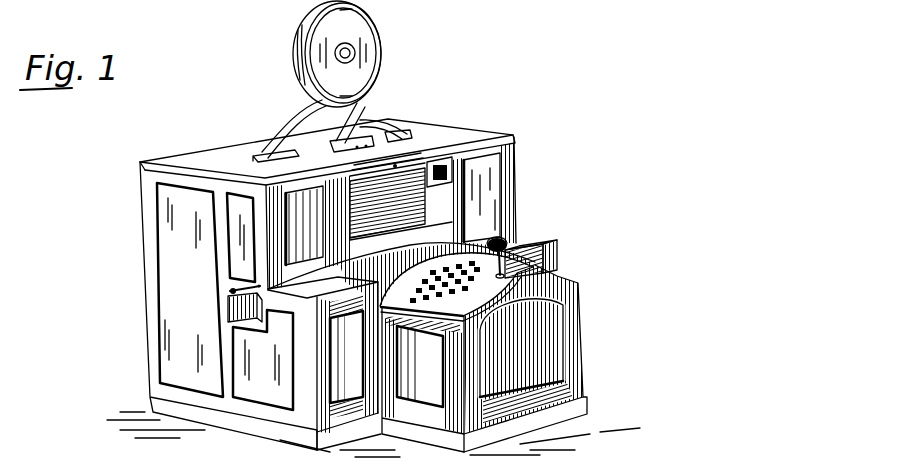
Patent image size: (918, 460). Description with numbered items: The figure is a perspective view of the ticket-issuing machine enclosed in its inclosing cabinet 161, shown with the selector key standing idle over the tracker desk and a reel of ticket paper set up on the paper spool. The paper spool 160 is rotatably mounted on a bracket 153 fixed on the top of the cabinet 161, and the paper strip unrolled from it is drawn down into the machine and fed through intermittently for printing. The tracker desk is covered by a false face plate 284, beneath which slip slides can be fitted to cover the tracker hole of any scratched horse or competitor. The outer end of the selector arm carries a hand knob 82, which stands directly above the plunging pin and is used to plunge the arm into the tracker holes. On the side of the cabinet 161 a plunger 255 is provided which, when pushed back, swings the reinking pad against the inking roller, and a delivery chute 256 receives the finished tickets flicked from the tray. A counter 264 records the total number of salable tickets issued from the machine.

The hand knob 82 is at (507, 241).
The bracket 153 is at (300, 120).
The paper spool 160 is at (362, 28).
The inclosing cabinet 161 is at (140, 199).
The plunger 255 is at (230, 290).
The delivery chute 256 is at (230, 307).
The counter 264 is at (440, 172).
The false face plate 284 is at (547, 257).